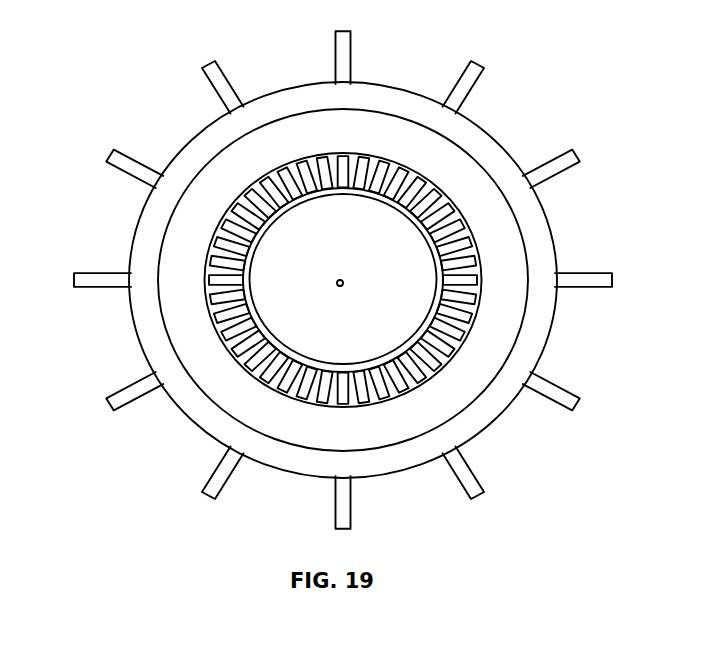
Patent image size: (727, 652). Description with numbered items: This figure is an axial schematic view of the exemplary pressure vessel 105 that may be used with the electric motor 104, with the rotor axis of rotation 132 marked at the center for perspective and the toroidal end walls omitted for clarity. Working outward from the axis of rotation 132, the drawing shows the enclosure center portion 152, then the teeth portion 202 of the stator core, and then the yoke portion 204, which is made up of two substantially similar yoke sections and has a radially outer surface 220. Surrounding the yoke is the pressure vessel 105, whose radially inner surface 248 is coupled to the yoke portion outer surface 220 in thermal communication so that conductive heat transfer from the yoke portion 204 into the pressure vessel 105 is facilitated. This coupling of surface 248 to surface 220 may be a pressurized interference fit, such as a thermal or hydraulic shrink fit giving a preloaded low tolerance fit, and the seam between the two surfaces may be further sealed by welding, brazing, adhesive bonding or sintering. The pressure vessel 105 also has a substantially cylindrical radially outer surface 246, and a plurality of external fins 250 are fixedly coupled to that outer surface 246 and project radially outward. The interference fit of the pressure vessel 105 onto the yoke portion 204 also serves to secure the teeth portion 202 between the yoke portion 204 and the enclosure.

The electric motor 104 is at (126, 76).
The pressure vessel 105 is at (486, 140).
The radially outer surface 220 is at (287, 112).
The radially inner surface 248 is at (383, 112).
The external fins 250 is at (576, 156).
The radially outer surface 246 is at (558, 232).
The yoke portion 204 is at (508, 302).
The teeth portion 202 is at (440, 353).
The enclosure center portion 152 is at (333, 372).
The axis of rotation 132 is at (341, 280).